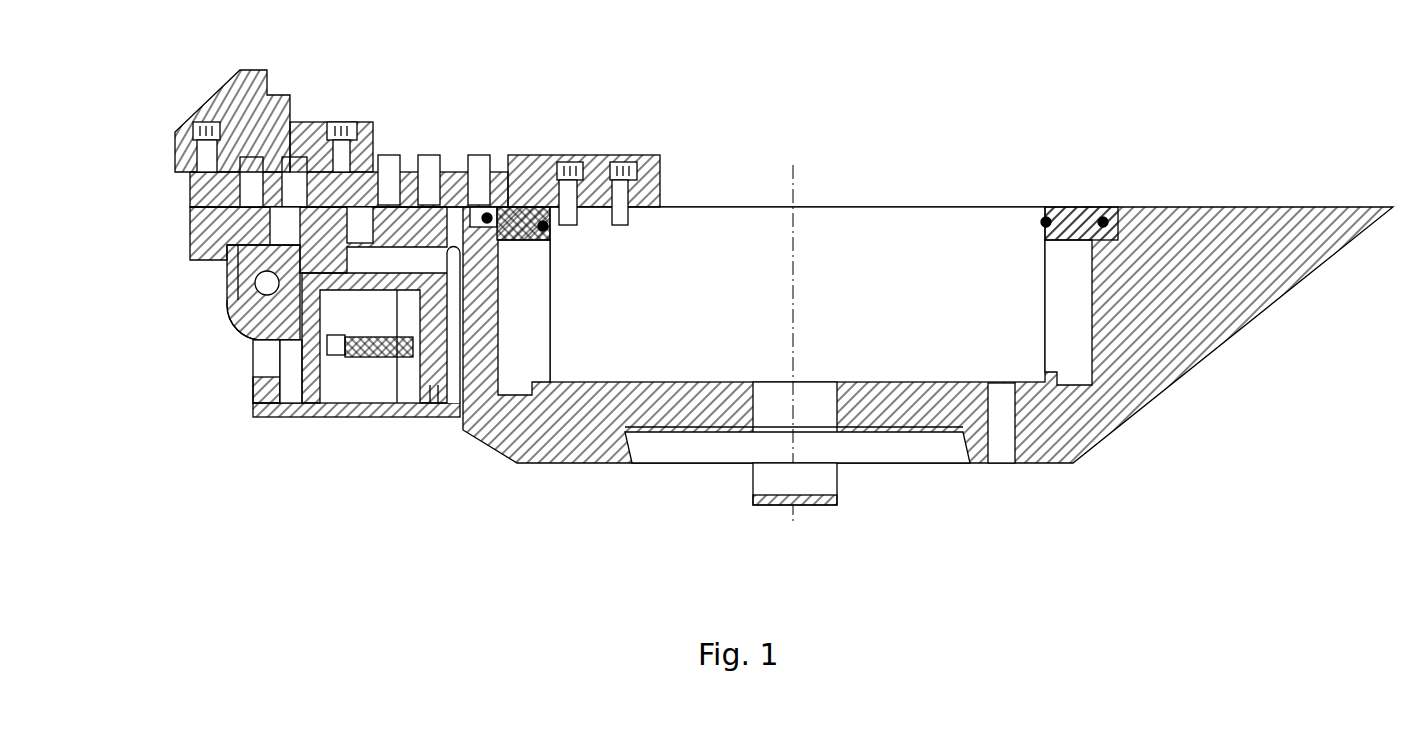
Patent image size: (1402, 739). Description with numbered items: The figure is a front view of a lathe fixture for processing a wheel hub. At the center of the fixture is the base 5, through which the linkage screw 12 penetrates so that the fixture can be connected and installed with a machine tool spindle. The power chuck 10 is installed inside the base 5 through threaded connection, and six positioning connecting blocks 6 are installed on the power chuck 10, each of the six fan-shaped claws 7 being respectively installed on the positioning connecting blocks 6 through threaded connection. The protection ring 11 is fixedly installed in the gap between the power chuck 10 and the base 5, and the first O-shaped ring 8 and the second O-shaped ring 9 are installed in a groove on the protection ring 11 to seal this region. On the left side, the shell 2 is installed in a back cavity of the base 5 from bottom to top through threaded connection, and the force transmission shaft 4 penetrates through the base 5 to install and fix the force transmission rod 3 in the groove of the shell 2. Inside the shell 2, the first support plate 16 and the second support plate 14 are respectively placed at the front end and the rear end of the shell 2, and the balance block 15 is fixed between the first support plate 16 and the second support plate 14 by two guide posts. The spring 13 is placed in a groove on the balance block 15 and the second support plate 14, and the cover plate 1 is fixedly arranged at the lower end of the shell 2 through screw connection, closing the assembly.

The cover plate 1 is at (251, 403).
The shell 2 is at (255, 373).
The force transmission rod 3 is at (246, 327).
The force transmission shaft 4 is at (258, 280).
The base 5 is at (199, 219).
The positioning connecting blocks 6 is at (203, 183).
The fan-shaped claws 7 is at (176, 140).
The first O-shaped ring 8 is at (491, 212).
The second O-shaped ring 9 is at (553, 204).
The power chuck 10 is at (670, 222).
The protection ring 11 is at (1082, 212).
The linkage screw 12 is at (817, 466).
The spring 13 is at (447, 388).
The second support plate 14 is at (420, 400).
The balance block 15 is at (362, 398).
The first support plate 16 is at (300, 402).